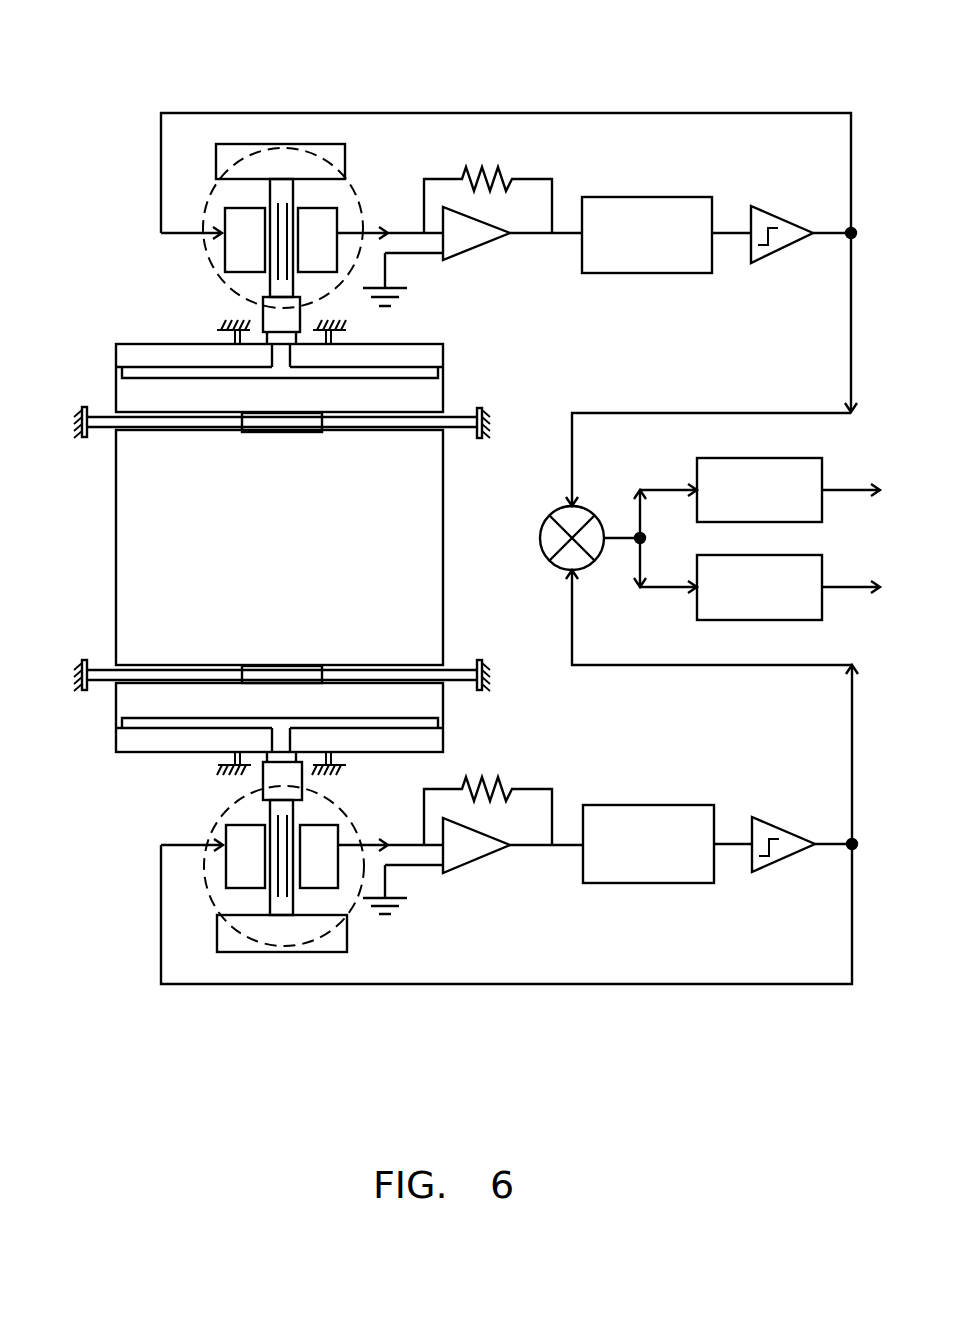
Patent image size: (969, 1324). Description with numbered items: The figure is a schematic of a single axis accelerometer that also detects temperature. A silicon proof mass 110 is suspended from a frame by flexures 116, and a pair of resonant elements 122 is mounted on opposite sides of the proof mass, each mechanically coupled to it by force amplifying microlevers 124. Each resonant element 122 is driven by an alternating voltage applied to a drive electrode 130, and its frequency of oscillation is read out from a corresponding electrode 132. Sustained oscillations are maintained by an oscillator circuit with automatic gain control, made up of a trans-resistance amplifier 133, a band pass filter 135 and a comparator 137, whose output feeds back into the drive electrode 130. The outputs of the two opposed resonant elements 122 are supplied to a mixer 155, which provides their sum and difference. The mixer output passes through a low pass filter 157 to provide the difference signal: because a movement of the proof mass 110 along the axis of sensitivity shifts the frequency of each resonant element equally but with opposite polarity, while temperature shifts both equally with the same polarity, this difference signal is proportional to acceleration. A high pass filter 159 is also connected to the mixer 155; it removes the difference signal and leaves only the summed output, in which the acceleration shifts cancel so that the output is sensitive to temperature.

The silicon proof mass 110 is at (395, 505).
The flexures 116 is at (102, 420).
The resonant elements 122 is at (293, 202).
The force amplifying microlevers 124 is at (430, 355).
The drive electrode 130 is at (238, 215).
The read-out electrode 132 is at (330, 220).
The trans-resistance amplifier 133 is at (473, 253).
The band pass filter 135 is at (645, 273).
The comparator 137 is at (782, 252).
The mixer 155 is at (597, 517).
The low pass filter 157 is at (767, 620).
The high pass filter 159 is at (770, 455).